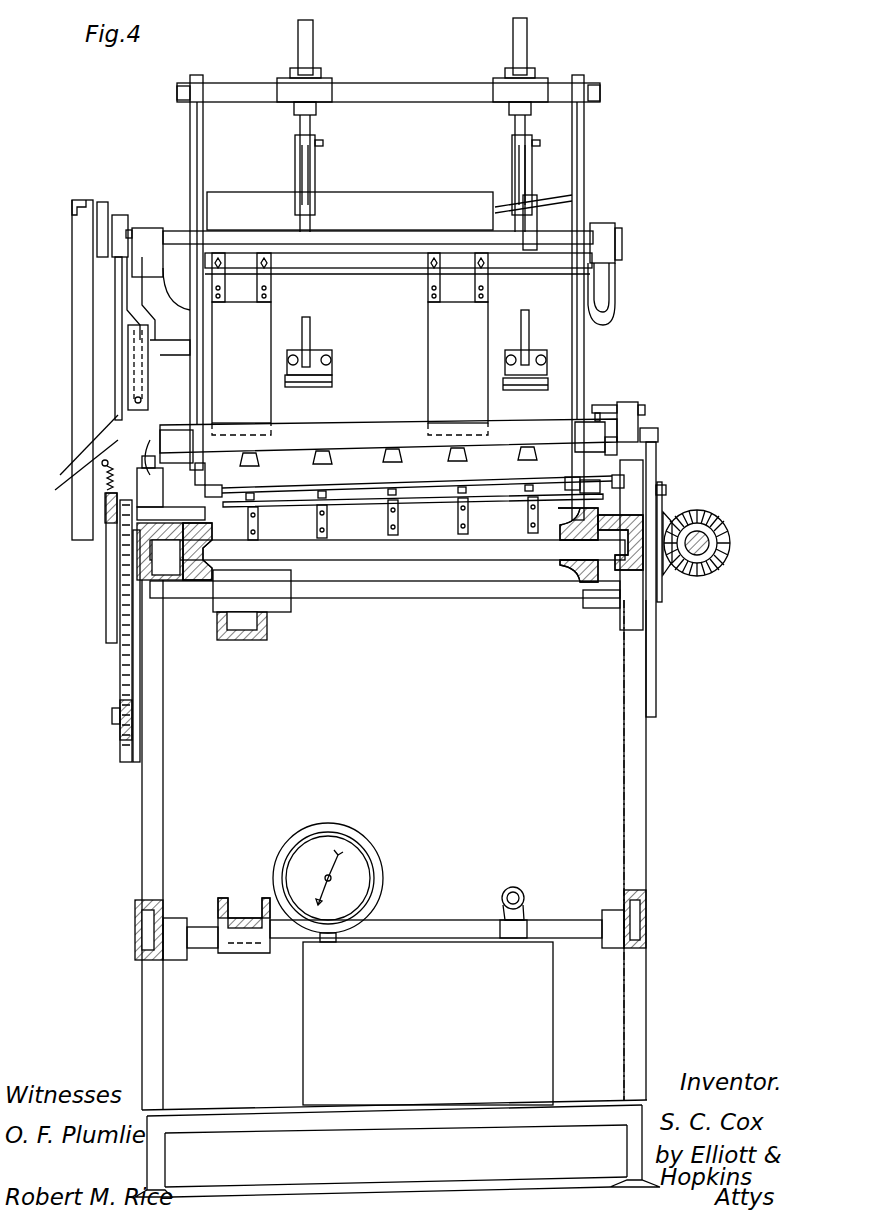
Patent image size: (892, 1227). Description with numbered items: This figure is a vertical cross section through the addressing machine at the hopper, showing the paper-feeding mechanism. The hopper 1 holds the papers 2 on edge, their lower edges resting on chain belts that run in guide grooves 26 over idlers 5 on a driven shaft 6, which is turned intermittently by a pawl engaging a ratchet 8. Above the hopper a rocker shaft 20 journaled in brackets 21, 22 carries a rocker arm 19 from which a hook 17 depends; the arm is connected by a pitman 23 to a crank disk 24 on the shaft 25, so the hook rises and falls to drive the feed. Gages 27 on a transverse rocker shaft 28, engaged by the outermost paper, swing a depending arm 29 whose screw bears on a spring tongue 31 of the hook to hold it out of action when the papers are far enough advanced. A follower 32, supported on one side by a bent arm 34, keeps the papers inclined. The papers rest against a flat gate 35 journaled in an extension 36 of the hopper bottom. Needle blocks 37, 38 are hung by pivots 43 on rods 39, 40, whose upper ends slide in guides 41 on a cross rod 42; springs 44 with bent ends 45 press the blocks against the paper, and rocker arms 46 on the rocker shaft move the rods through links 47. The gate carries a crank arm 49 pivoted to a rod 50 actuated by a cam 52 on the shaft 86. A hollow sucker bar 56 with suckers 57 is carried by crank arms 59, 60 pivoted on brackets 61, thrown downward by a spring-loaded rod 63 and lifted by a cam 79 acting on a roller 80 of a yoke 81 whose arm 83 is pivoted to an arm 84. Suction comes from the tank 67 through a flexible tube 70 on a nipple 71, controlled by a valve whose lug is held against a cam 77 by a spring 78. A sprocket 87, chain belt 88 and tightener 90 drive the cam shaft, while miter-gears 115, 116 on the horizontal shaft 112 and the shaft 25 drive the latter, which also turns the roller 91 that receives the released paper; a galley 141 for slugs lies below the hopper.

The hopper 1 is at (210, 196).
The papers 2 is at (58, 476).
The idlers 5 is at (332, 540).
The driven shaft 6 is at (362, 515).
The ratchet 8 is at (105, 500).
The hook 17 is at (115, 368).
The rocker arm 19 is at (106, 203).
The rocker shaft 20 is at (548, 234).
The bracket 21 is at (150, 246).
The bracket 22 is at (606, 226).
The pitman 23 is at (72, 352).
The crank disk 24 is at (108, 553).
The shaft 25 is at (526, 556).
The guide grooves 26 is at (250, 493).
The gages 27 is at (272, 412).
The rocker shaft 28 is at (355, 284).
The depending arm 29 is at (135, 292).
The spring tongue 31 is at (148, 396).
The follower 32 is at (378, 196).
The arm 34 is at (558, 208).
The gate 35 is at (320, 515).
The extension 36 is at (410, 500).
The needle block 37 is at (322, 368).
The needle block 38 is at (512, 358).
The rod 39 is at (313, 55).
The rod 40 is at (525, 45).
The guides 41 is at (316, 110).
The cross rod 42 is at (386, 96).
The pivots 43 is at (290, 352).
The springs 44 is at (305, 370).
The bent end 45 is at (330, 385).
The rocker arms 46 is at (378, 222).
The links 47 is at (315, 180).
The crank arm 49 is at (588, 488).
The rod 50 is at (708, 470).
The cam 52 is at (590, 590).
The sucker bar 56 is at (388, 428).
The suckers 57 is at (300, 458).
The crank arm 59 is at (171, 491).
The crank arm 60 is at (640, 426).
The brackets 61 is at (180, 430).
The rod 63 is at (586, 437).
The tank 67 is at (317, 991).
The flexible tube 70 is at (142, 462).
The nipple 71 is at (152, 445).
The cam 77 is at (96, 646).
The spring 78 is at (106, 484).
The cam 79 is at (664, 520).
The roller 80 is at (662, 508).
The yoke 81 is at (642, 622).
The arm 83 is at (658, 460).
The arm 84 is at (600, 446).
The shaft 86 is at (510, 598).
The sprocket 87 is at (118, 560).
The chain belt 88 is at (120, 680).
The tightener 90 is at (120, 742).
The roller 91 is at (545, 598).
The horizontal shaft 112 is at (706, 548).
The miter-gear 115 is at (706, 573).
The miter-gear 116 is at (668, 578).
The galley 141 is at (255, 641).